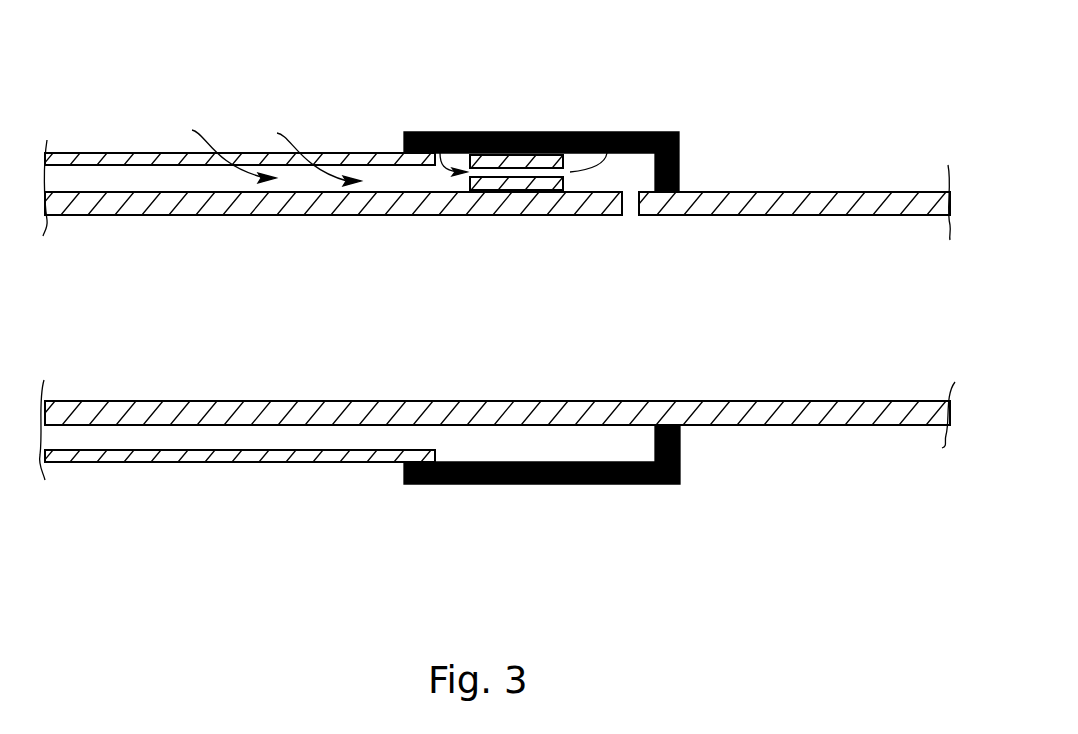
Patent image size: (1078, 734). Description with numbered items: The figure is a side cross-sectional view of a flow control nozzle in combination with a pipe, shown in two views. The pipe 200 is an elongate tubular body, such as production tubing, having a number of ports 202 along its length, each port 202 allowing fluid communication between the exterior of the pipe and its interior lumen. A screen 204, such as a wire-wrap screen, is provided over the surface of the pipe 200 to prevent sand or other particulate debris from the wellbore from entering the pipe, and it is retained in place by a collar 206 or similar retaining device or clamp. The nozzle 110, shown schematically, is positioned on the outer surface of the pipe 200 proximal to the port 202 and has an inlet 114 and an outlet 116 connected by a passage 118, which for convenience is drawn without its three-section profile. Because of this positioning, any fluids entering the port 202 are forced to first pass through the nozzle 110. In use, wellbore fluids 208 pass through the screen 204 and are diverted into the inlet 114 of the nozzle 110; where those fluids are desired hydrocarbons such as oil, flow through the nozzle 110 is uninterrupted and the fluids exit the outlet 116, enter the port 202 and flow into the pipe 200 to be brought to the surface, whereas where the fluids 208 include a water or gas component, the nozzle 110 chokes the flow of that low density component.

The nozzle 110 is at (488, 186).
The inlet 114 is at (447, 132).
The outlet 116 is at (618, 132).
The passage 118 is at (522, 172).
The pipe 200 is at (810, 192).
The port 202 is at (627, 203).
The screen 204 is at (65, 153).
The collar 206 is at (515, 132).
The wellbore fluids 208 is at (207, 130).